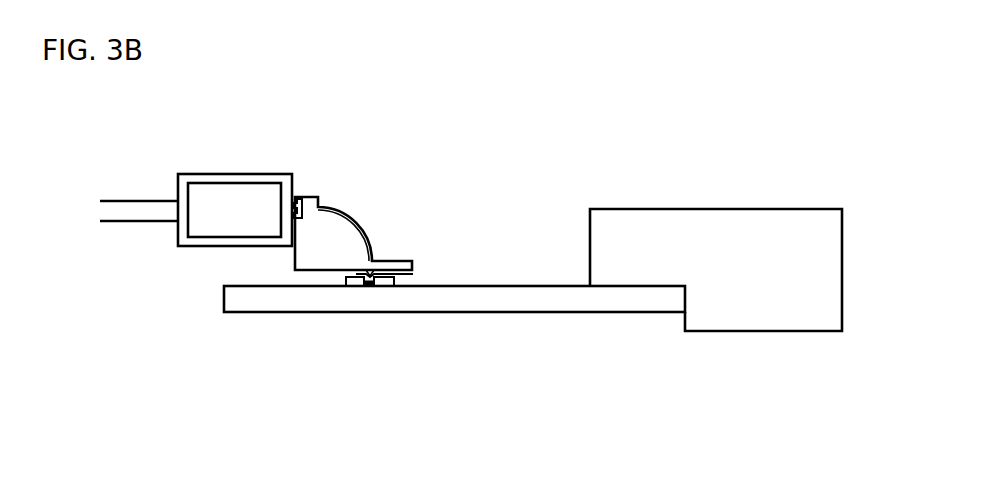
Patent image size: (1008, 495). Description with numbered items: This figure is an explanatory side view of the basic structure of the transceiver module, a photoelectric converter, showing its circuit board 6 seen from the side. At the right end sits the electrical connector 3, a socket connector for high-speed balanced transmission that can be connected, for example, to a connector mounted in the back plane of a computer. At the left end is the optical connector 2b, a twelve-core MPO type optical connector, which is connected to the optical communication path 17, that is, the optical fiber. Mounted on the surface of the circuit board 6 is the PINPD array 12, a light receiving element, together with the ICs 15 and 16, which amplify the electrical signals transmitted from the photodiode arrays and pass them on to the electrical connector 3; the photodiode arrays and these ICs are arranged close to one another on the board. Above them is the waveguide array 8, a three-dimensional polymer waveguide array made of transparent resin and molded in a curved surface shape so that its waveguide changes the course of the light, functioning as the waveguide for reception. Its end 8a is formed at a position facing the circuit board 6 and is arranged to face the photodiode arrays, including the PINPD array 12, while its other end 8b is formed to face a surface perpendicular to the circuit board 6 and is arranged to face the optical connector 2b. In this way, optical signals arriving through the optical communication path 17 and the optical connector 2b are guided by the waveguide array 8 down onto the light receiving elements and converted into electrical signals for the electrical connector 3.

The optical connector 2b is at (203, 190).
The optical communication path 17 is at (138, 212).
The waveguide array 8 is at (347, 210).
The other end of the waveguide array 8b is at (296, 198).
The end of the waveguide array 8a is at (413, 274).
The IC 16 is at (352, 286).
The IC 15 is at (387, 286).
The PINPD array 12 is at (367, 286).
The circuit board 6 is at (555, 302).
The electrical connector 3 is at (690, 225).